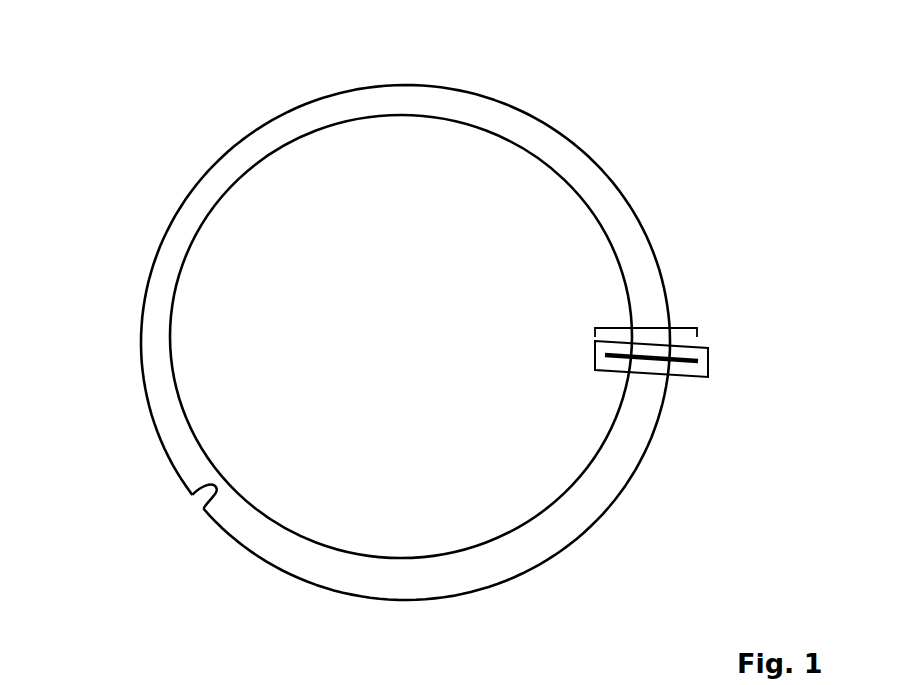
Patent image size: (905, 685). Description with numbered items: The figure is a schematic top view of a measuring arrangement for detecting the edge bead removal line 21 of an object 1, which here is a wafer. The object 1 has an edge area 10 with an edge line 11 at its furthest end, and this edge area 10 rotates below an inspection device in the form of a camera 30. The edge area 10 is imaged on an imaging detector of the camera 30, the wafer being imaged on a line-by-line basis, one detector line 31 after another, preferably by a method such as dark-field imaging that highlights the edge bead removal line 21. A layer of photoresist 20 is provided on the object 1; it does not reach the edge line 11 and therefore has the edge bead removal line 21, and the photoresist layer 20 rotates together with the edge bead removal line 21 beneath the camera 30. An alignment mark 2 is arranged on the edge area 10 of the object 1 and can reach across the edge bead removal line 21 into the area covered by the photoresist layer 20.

The object 1 is at (200, 142).
The alignment mark 2 is at (200, 498).
The edge area 10 is at (633, 327).
The edge line 11 is at (590, 528).
The photoresist layer 20 is at (439, 325).
The edge bead removal line 21 is at (608, 238).
The camera 30 is at (685, 372).
The detector line 31 is at (655, 362).